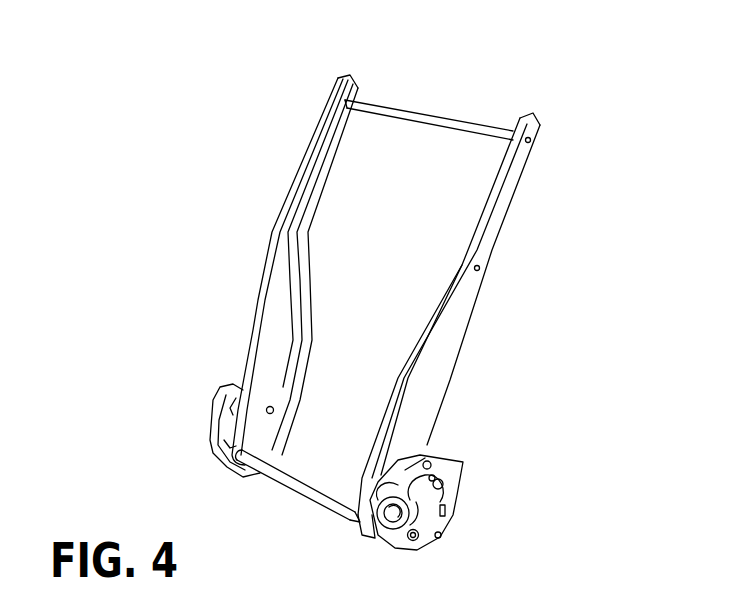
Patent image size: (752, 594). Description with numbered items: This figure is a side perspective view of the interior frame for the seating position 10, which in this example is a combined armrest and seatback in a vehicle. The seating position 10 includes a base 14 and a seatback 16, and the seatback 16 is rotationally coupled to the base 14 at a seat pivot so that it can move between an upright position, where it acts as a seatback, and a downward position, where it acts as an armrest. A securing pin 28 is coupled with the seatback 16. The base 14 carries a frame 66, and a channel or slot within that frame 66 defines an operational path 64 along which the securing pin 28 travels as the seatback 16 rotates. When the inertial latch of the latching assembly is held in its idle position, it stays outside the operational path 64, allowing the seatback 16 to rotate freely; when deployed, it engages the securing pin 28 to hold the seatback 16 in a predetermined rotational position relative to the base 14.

The seating position 10 is at (570, 197).
The seatback 16 is at (294, 173).
The frame 66 is at (437, 381).
The base 14 is at (455, 515).
The operational path 64 is at (458, 495).
The securing pin 28 is at (422, 541).